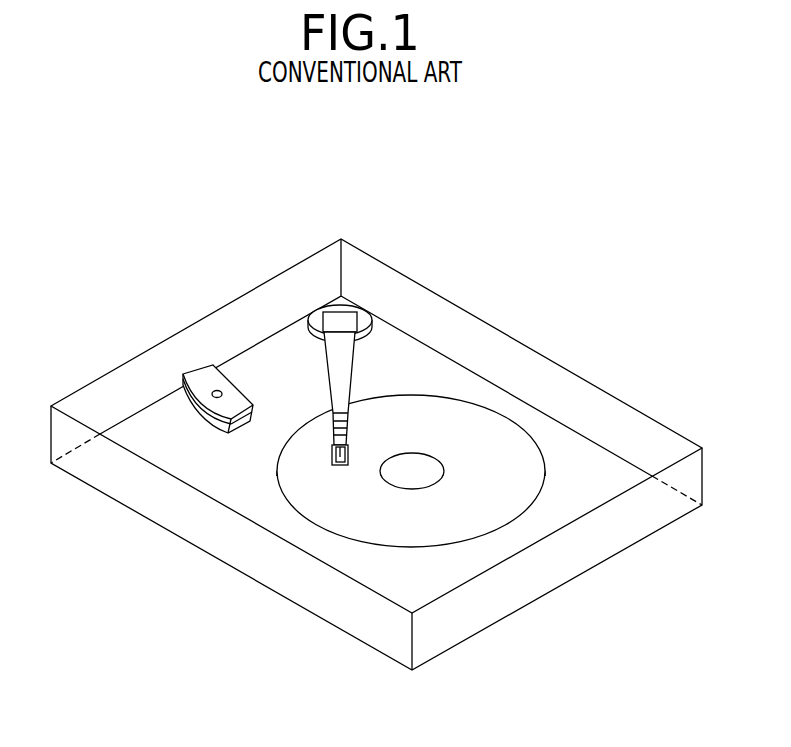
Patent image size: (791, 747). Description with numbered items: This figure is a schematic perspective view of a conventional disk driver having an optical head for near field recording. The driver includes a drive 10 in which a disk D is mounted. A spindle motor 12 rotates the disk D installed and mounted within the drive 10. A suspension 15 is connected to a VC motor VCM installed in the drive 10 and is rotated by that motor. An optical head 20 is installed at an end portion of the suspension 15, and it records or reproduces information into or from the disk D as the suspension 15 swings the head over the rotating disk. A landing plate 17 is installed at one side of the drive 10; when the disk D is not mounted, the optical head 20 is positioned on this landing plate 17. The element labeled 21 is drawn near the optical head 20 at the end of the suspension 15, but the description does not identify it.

The drive 10 is at (633, 520).
The spindle motor 12 is at (418, 468).
The suspension 15 is at (332, 365).
The landing plate 17 is at (203, 377).
The optical head 20 is at (360, 433).
The slider 21 is at (337, 462).
The VC motor VCM is at (348, 317).
The disk D is at (467, 517).